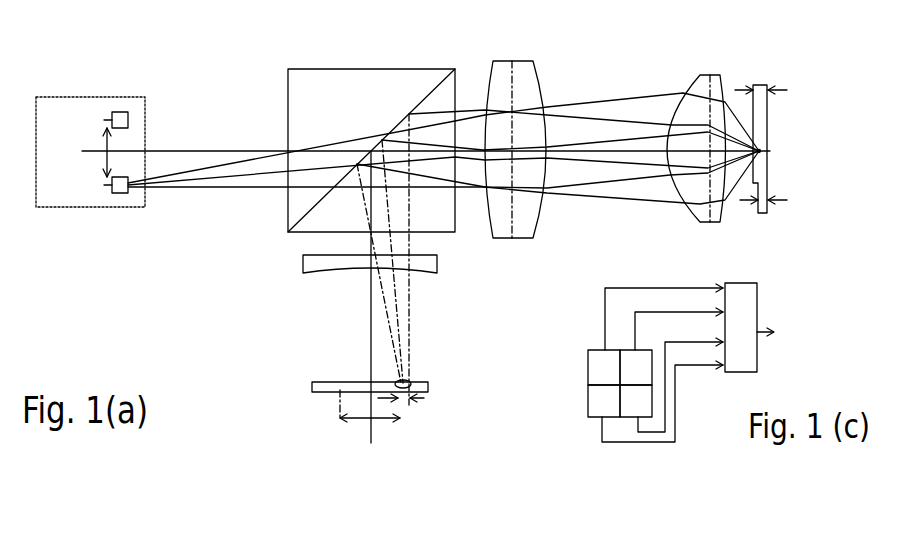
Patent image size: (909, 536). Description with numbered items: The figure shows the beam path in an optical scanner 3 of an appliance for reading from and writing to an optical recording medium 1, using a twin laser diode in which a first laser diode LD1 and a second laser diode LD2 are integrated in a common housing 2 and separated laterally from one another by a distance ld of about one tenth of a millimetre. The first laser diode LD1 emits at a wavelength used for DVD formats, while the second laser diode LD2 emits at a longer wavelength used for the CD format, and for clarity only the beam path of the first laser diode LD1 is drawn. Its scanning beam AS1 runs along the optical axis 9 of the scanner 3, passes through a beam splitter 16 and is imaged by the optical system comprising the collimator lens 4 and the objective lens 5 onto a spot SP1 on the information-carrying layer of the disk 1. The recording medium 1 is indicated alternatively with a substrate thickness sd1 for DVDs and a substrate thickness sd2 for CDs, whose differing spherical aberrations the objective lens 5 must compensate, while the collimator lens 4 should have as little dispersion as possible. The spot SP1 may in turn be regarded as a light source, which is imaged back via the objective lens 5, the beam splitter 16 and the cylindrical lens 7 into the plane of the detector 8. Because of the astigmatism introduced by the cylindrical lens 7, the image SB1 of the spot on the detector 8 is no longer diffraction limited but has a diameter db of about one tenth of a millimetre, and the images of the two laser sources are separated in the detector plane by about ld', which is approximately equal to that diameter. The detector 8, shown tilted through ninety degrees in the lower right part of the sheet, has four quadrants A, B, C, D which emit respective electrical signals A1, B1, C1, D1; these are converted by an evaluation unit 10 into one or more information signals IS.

In FIG. 1A, the optical recording medium 1 is at (770, 120).
In FIG. 1A, the common housing 2 is at (50, 210).
In FIG. 1A, the optical scanner 3 is at (182, 248).
In FIG. 1A, the collimator lens 4 is at (530, 234).
In FIG. 1A, the objective lens 5 is at (700, 88).
In FIG. 1A, the cylindrical lens 7 is at (300, 262).
In FIG. 1A, the detector 8 is at (312, 386).
In FIG. 1A, the optical axis 9 is at (190, 150).
In FIG. 1C, the evaluation unit 10 is at (760, 296).
In FIG. 1A, the beam splitter 16 is at (334, 86).
In FIG. 1A, the first laser diode LD1 is at (116, 193).
In FIG. 1A, the second laser diode LD2 is at (117, 112).
In FIG. 1A, the lateral separation of the laser sources ld is at (80, 152).
In FIG. 1A, the first scanning beam AS1 is at (246, 183).
In FIG. 1A, the first spot SP1 is at (772, 155).
In FIG. 1A, the substrate thickness for DVDs sd1 is at (785, 209).
In FIG. 1A, the substrate thickness for CDs sd2 is at (785, 91).
In FIG. 1A, the image of the first spot SB1 is at (409, 381).
In FIG. 1A, the spot image diameter db is at (422, 400).
In FIG. 1A, the separation of the spot images ld' is at (361, 459).
In FIG. 1C, the first detector quadrant A is at (590, 368).
In FIG. 1C, the second detector quadrant B is at (634, 360).
In FIG. 1C, the third detector quadrant C is at (637, 408).
In FIG. 1C, the fourth detector quadrant D is at (590, 405).
In FIG. 1C, the first quadrant signal A1 is at (635, 317).
In FIG. 1C, the second quadrant signal B1 is at (679, 318).
In FIG. 1C, the third quadrant signal C1 is at (680, 376).
In FIG. 1C, the fourth quadrant signal D1 is at (662, 401).
In FIG. 1C, the information signal IS is at (779, 337).